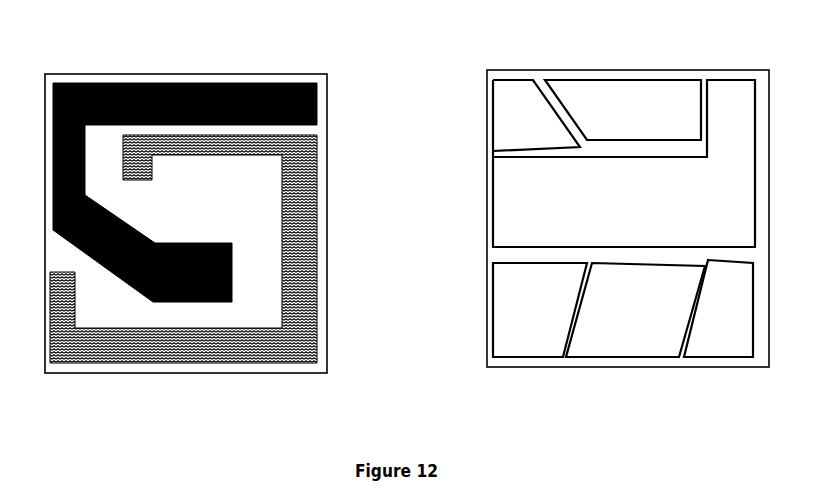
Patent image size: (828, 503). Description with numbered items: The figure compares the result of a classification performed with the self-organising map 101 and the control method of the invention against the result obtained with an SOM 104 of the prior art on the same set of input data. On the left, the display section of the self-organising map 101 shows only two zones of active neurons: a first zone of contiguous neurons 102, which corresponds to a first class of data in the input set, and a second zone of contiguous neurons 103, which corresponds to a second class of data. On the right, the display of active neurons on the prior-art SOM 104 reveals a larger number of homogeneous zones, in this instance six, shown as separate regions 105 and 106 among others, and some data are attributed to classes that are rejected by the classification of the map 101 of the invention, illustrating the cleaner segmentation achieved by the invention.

The self-organising map 101 is at (327, 122).
The first zone of contiguous neurons 102 is at (175, 243).
The second zone of contiguous neurons 103 is at (282, 193).
The SOM of the prior art 104 is at (488, 346).
The middle electrode region 105 is at (508, 217).
The upper trapezoidal electrode segments 106 is at (503, 122).